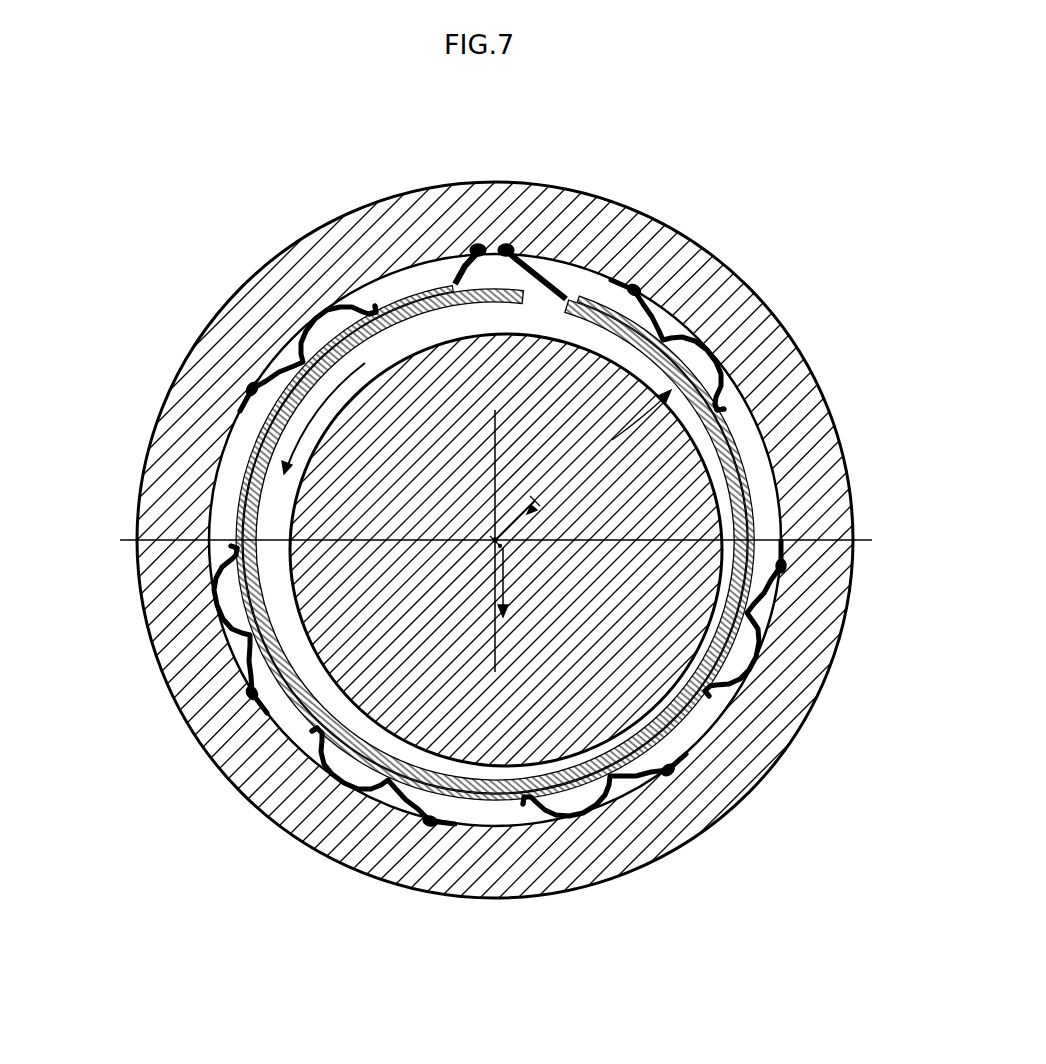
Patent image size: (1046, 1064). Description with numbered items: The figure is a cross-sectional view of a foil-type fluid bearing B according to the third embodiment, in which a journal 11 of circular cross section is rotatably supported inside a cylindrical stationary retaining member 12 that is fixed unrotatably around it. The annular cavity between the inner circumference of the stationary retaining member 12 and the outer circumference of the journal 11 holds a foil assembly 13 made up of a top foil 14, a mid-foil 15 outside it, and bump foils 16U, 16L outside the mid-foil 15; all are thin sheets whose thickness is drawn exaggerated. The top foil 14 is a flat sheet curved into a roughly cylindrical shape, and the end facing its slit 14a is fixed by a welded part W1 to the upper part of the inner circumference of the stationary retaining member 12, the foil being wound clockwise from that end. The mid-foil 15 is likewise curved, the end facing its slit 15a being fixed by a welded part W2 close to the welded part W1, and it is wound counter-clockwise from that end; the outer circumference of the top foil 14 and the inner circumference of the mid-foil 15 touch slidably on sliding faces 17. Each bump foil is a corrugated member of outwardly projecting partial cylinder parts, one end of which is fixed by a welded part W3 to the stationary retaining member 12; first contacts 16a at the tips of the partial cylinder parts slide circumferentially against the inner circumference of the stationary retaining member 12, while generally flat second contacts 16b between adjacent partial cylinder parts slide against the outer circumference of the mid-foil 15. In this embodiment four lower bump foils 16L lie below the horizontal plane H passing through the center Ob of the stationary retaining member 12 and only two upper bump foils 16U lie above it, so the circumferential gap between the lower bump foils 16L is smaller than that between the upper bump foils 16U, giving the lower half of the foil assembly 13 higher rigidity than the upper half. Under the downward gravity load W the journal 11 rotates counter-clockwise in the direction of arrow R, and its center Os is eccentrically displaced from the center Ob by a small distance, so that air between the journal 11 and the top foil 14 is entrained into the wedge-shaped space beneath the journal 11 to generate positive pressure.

The journal 11 is at (545, 448).
The stationary retaining member 12 is at (323, 305).
The foil assembly 13 is at (623, 425).
The top foil 14 is at (495, 522).
The slit 14a is at (537, 302).
The mid-foil 15 is at (495, 526).
The slit 15a is at (560, 303).
The first contacts 16a is at (494, 534).
The upper bump foils 16U is at (378, 301).
The lower bump foils 16L is at (210, 585).
The second contacts 16b is at (586, 380).
The sliding faces 17 is at (475, 775).
The welded part W1 is at (508, 246).
The welded part W2 is at (478, 246).
The welded part W3 is at (250, 383).
The fluid bearing B is at (704, 196).
The horizontal plane H is at (851, 493).
The rotation direction arrow R is at (316, 439).
The downward load W is at (512, 597).
The center of the stationary retaining member Ob is at (493, 542).
The center of the journal Os is at (500, 547).